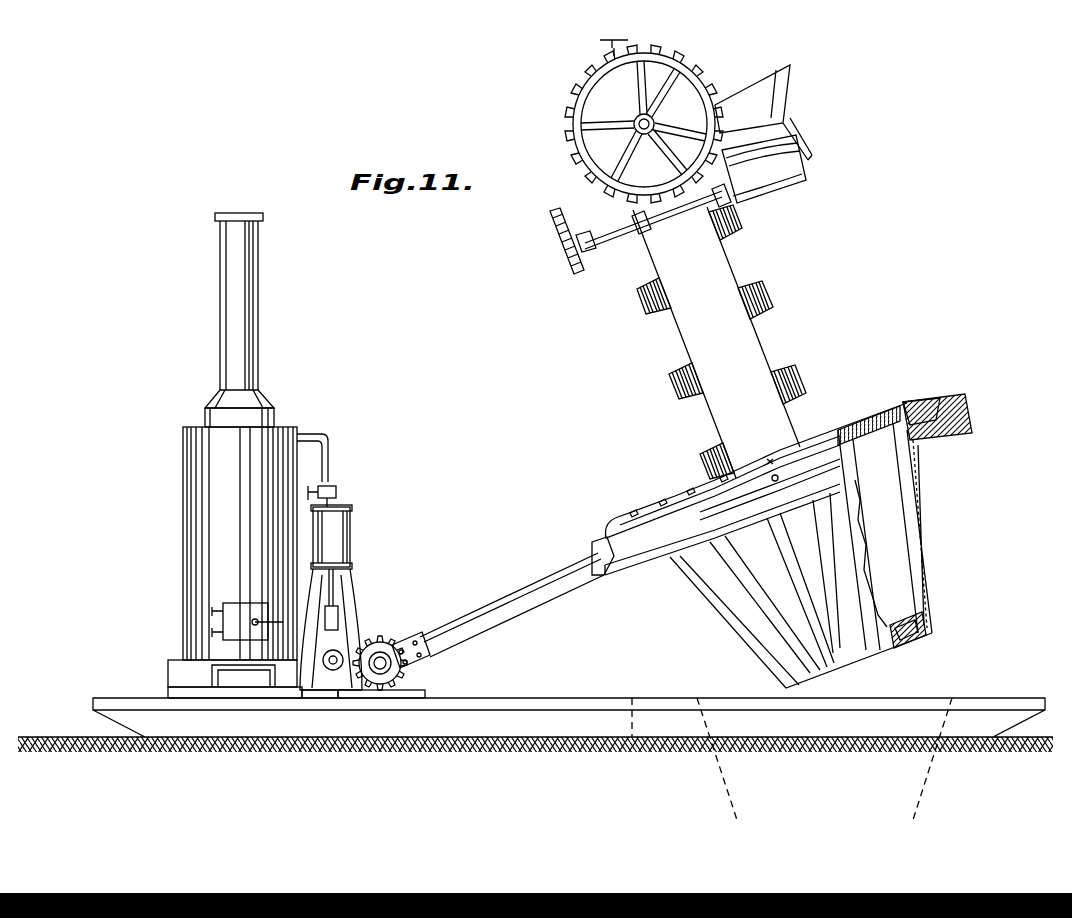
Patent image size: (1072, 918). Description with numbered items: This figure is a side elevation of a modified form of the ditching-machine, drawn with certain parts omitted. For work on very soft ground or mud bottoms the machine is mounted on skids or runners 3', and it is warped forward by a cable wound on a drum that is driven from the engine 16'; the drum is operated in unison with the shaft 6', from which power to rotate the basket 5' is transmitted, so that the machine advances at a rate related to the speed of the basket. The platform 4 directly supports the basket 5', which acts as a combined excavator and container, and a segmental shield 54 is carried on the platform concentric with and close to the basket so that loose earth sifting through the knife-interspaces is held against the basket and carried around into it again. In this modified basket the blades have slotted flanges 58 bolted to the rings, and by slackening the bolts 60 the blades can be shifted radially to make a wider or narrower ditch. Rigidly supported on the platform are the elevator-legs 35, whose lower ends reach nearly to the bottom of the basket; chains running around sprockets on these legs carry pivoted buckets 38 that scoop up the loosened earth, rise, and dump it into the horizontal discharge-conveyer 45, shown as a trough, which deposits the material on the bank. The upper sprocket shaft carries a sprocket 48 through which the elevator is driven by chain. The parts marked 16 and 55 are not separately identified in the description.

The skids or runners 3' is at (535, 760).
The engine 16' is at (225, 455).
The engine 16 is at (340, 566).
The shaft 6' is at (384, 648).
The platform 4 is at (545, 611).
The basket 5' is at (768, 545).
The segmental shield 54 is at (930, 552).
The flanges 58 is at (948, 404).
The bolts 60 is at (912, 406).
The elevator-legs 35 is at (716, 342).
The buckets 38 is at (766, 315).
The sprocket 48 is at (633, 192).
The horizontal discharge-conveyer 45 is at (776, 180).
The bevel gear shaft 55 is at (618, 232).